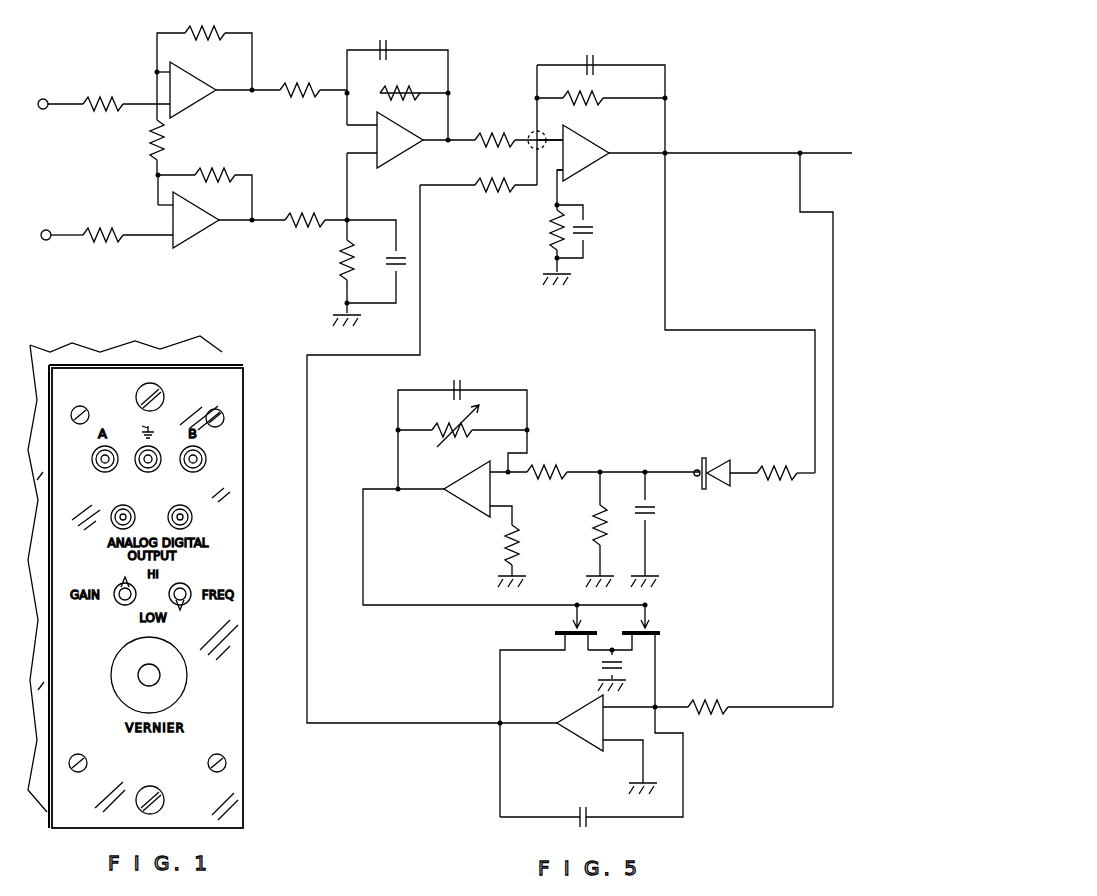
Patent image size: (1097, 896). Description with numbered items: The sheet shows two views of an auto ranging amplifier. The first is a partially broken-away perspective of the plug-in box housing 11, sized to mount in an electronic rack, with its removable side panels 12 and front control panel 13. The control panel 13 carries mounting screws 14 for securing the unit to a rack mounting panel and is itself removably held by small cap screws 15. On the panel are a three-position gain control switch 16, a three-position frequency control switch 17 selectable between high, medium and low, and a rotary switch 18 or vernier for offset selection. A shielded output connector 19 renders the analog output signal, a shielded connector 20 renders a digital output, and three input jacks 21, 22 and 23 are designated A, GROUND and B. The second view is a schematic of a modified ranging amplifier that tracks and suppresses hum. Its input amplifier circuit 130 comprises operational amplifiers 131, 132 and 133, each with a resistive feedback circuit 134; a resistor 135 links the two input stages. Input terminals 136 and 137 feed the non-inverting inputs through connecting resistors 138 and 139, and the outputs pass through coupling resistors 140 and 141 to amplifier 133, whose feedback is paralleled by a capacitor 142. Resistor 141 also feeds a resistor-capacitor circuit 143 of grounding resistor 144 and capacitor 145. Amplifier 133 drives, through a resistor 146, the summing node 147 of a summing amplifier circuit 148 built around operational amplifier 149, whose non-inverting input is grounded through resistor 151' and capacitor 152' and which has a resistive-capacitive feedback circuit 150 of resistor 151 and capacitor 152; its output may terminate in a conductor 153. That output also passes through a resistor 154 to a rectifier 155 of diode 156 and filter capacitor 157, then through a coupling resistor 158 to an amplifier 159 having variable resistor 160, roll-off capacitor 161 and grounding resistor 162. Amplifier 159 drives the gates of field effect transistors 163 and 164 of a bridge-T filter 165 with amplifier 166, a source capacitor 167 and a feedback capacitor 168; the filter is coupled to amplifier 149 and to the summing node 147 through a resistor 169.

In FIG. 1, the plug-in box housing 11 is at (268, 363).
In FIG. 1, the removable side panels 12 is at (46, 350).
In FIG. 1, the front control panel 13 is at (97, 393).
In FIG. 1, the mounting screws 14 is at (160, 393).
In FIG. 1, the cap screws 15 is at (225, 418).
In FIG. 1, the gain control switch 16 is at (118, 588).
In FIG. 1, the frequency control switch 17 is at (188, 586).
In FIG. 1, the rotary switch 18 is at (187, 688).
In FIG. 1, the shielded output connector 19 is at (112, 512).
In FIG. 1, the shielded connector 20 is at (192, 487).
In FIG. 1, the input jack 21 is at (92, 461).
In FIG. 1, the input jack 22 is at (148, 472).
In FIG. 1, the input jack 23 is at (206, 459).
In FIG. 5, the input amplifier circuit 130 is at (476, 51).
In FIG. 5, the operational amplifier 131 is at (188, 78).
In FIG. 5, the operational amplifier 132 is at (193, 209).
In FIG. 5, the operational amplifier 133 is at (410, 151).
In FIG. 5, the resistive feedback circuit 134 is at (252, 58).
In FIG. 5, the gain resistor 135 is at (163, 143).
In FIG. 5, the input terminal 136 is at (46, 99).
In FIG. 5, the input terminal 137 is at (46, 230).
In FIG. 5, the connecting resistor 138 is at (102, 102).
In FIG. 5, the connecting resistor 139 is at (97, 230).
In FIG. 5, the coupling resistor 140 is at (282, 100).
In FIG. 5, the coupling resistor 141 is at (295, 215).
In FIG. 5, the capacitor 142 is at (385, 43).
In FIG. 5, the resistor-capacitor circuit 143 is at (388, 318).
In FIG. 5, the grounding resistor 144 is at (345, 284).
In FIG. 5, the capacitor 145 is at (400, 266).
In FIG. 5, the resistor 146 is at (510, 195).
In FIG. 5, the summing node 147 is at (534, 134).
In FIG. 5, the summing amplifier circuit 148 is at (686, 101).
In FIG. 5, the operational amplifier 149 is at (601, 173).
In FIG. 5, the resistive-capacitive feedback circuit 150 is at (666, 129).
In FIG. 5, the resistor 151 is at (601, 88).
In FIG. 5, the resistor 151' is at (539, 227).
In FIG. 5, the capacitor 152 is at (602, 110).
In FIG. 5, the capacitor 152' is at (595, 233).
In FIG. 5, the conductor 153 is at (776, 153).
In FIG. 5, the resistor 154 is at (790, 473).
In FIG. 5, the rectifier 155 is at (679, 460).
In FIG. 5, the diode 156 is at (727, 488).
In FIG. 5, the filter capacitor 157 is at (649, 513).
In FIG. 5, the coupling resistor 158 is at (565, 470).
In FIG. 5, the amplifier 159 is at (479, 514).
In FIG. 5, the variable resistor 160 is at (462, 440).
In FIG. 5, the roll-off capacitor 161 is at (465, 394).
In FIG. 5, the resistor 162 is at (516, 542).
In FIG. 5, the field effect transistor 163 is at (555, 633).
In FIG. 5, the field effect transistor 164 is at (661, 633).
In FIG. 5, the bridge-T filter 165 is at (744, 578).
In FIG. 5, the amplifier 166 is at (578, 740).
In FIG. 5, the capacitor 167 is at (604, 665).
In FIG. 5, the capacitor 168 is at (587, 821).
In FIG. 5, the resistor 169 is at (725, 716).